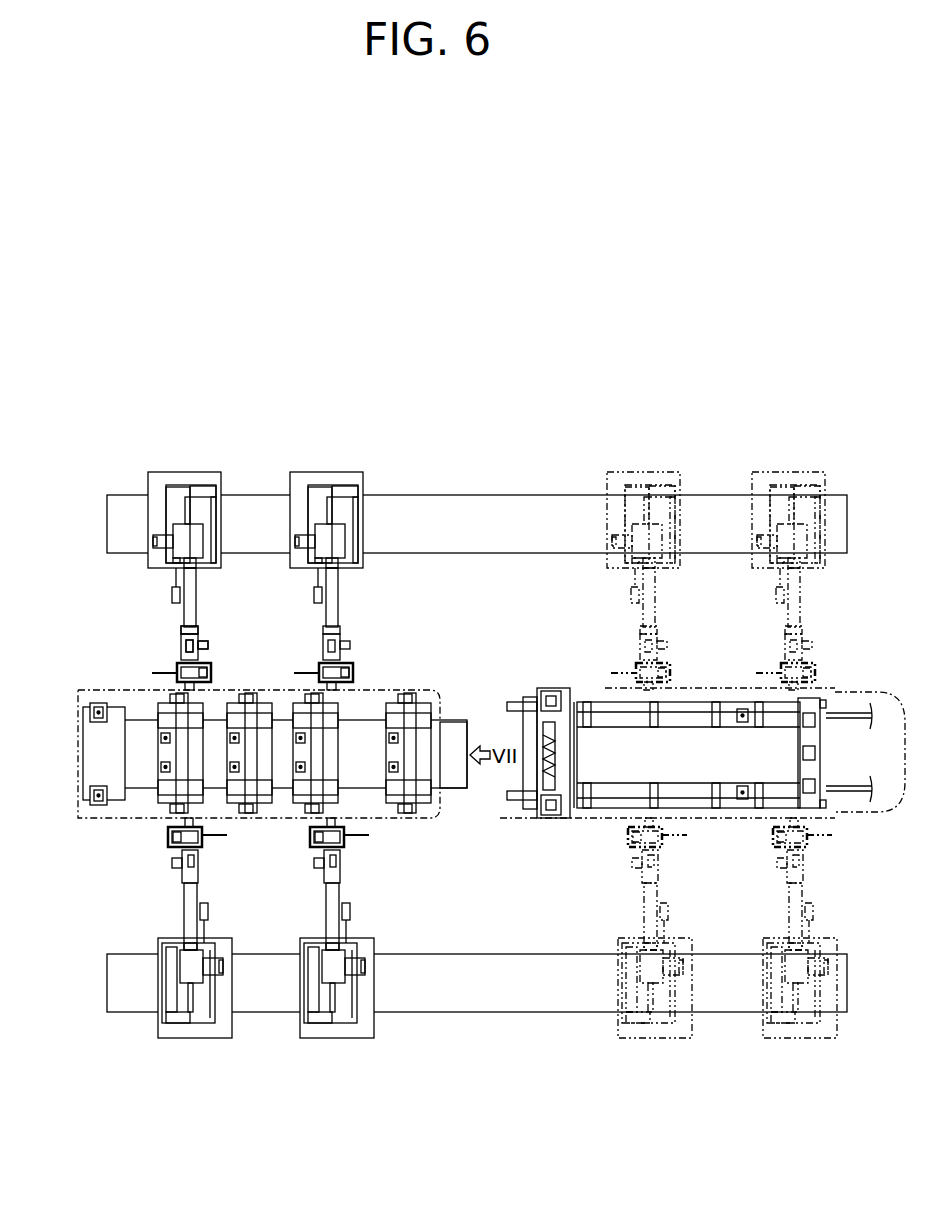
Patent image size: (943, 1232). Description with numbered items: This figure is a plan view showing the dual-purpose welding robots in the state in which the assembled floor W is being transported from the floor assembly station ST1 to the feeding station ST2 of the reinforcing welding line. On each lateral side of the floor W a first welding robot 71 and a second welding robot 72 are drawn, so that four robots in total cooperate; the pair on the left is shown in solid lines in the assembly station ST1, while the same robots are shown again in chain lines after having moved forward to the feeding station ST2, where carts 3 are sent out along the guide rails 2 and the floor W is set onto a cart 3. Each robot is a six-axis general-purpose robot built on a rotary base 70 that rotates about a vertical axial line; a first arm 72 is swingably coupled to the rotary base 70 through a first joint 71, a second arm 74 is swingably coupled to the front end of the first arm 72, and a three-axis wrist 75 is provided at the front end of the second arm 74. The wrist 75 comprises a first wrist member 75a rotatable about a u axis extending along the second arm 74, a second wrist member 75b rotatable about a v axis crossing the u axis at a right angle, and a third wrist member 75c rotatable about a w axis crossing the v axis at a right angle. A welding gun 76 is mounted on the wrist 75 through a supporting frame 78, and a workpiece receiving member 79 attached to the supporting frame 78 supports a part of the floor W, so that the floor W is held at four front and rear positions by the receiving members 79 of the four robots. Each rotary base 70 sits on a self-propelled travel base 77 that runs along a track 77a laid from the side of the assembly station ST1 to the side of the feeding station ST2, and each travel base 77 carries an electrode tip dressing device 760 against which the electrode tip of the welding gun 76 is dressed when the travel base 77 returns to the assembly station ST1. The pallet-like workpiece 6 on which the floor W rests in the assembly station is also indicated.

The guide rail 2 is at (848, 712).
The cart 3 is at (612, 738).
The pallet 6 is at (467, 722).
The rotary base 70 is at (172, 497).
The first joint 71 is at (745, 1080).
The first arm 72 is at (600, 1080).
The second arm 74 is at (196, 580).
The wrist 75 is at (176, 640).
The first wrist member 75a is at (180, 632).
The second wrist member 75b is at (181, 647).
The third wrist member 75c is at (182, 657).
The welding gun 76 is at (212, 673).
The travel base 77 is at (155, 523).
The track 77a is at (552, 505).
The supporting frame 78 is at (152, 673).
The workpiece receiving member 79 is at (185, 686).
The electrode tip dressing device 760 is at (172, 594).
The floor W is at (440, 772).
The u axis u is at (190, 618).
The v axis v is at (207, 630).
The w axis w is at (208, 647).
The assembly station ST1 is at (290, 910).
The feeding station ST2 is at (748, 897).